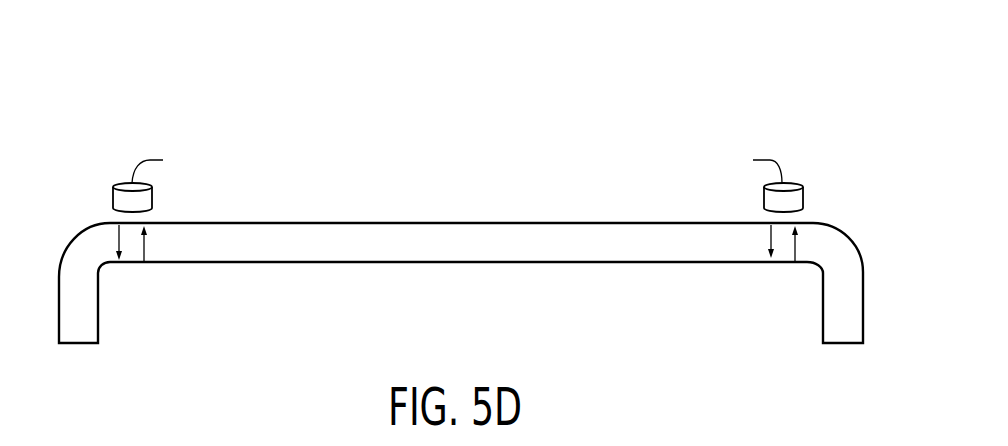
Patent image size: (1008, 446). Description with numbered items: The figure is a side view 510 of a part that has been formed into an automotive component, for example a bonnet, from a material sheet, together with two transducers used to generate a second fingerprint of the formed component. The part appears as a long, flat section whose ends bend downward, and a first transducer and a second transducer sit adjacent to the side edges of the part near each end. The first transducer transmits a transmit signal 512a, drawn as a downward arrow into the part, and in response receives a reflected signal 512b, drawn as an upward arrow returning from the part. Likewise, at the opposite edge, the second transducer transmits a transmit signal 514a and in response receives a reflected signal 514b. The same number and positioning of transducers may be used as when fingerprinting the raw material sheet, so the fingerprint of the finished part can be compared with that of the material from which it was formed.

The side view 510 is at (731, 49).
The transmit signal 512a is at (118, 238).
The reflected signal 512b is at (145, 247).
The transmit signal 514a is at (770, 238).
The reflected signal 514b is at (795, 250).